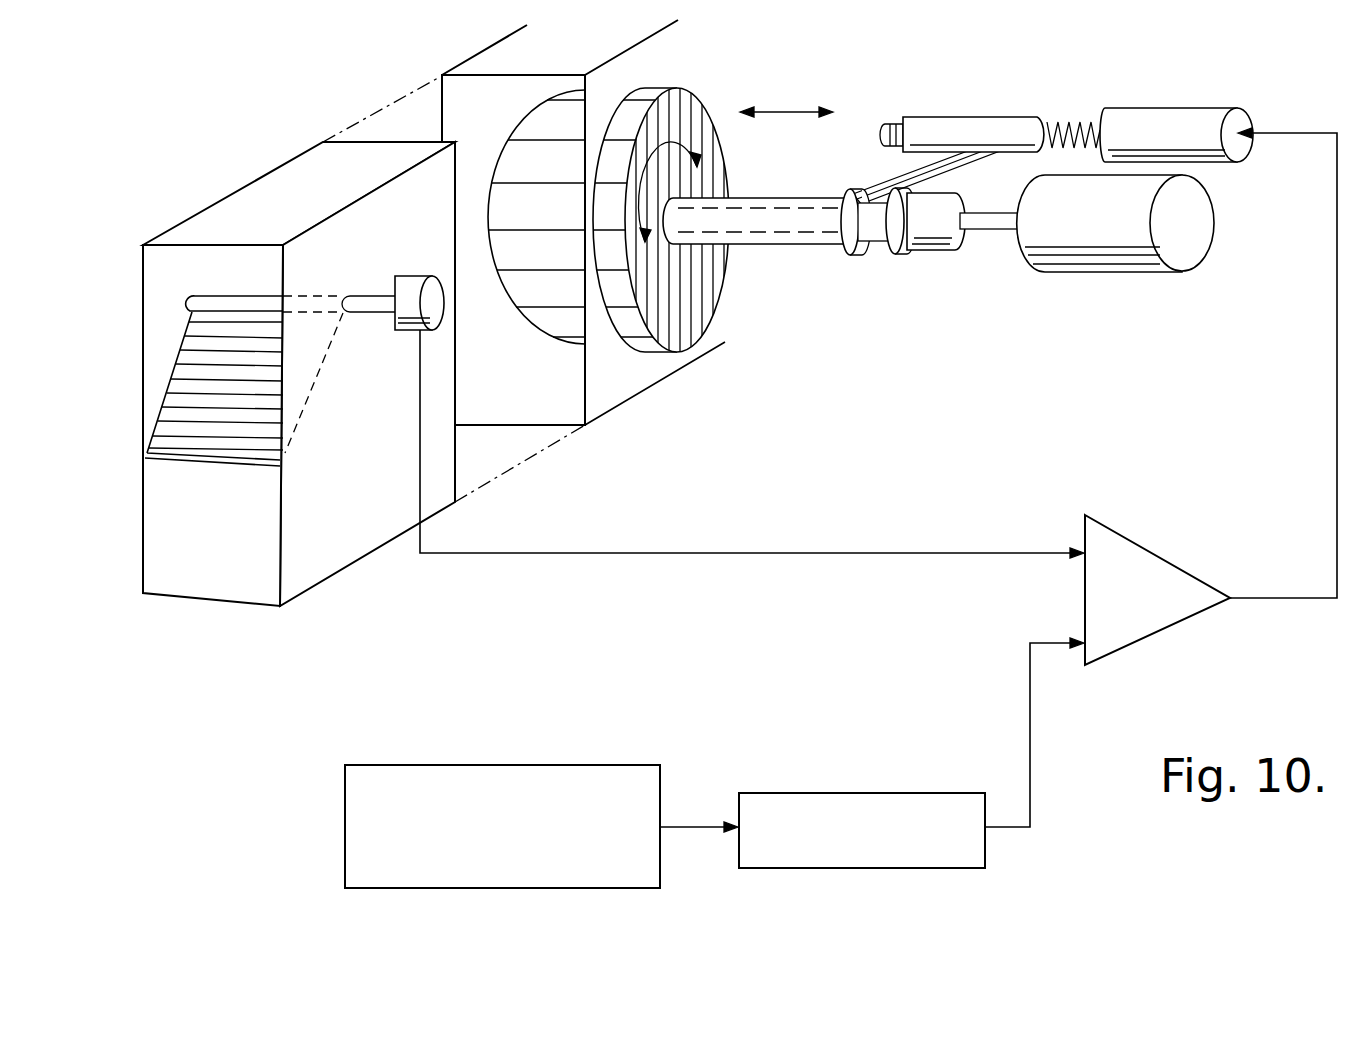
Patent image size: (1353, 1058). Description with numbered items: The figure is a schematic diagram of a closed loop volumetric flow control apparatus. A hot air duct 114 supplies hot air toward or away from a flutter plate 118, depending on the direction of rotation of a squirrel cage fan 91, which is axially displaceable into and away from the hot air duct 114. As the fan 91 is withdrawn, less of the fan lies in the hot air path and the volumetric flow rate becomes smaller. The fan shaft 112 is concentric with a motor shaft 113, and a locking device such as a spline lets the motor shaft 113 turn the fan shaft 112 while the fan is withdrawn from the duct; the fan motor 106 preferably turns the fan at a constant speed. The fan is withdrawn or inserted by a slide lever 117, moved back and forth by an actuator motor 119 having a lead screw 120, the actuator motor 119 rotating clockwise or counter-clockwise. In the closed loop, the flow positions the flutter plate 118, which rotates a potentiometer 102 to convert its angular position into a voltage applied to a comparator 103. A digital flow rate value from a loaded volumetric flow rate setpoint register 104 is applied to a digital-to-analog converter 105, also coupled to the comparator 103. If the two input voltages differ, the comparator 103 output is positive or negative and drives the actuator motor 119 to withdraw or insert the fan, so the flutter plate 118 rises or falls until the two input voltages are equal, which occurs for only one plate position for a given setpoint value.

The squirrel cage fan 91 is at (690, 342).
The potentiometer 102 is at (407, 331).
The comparator 103 is at (1167, 572).
The volumetric flow rate setpoint register 104 is at (348, 798).
The digital-to-analog converter 105 is at (972, 778).
The fan motor 106 is at (1203, 229).
The fan shaft 112 is at (780, 233).
The motor shaft 113 is at (1013, 214).
The hot air duct 114 is at (625, 385).
The slide lever 117 is at (947, 170).
The flutter plate 118 is at (205, 450).
The actuator motor 119 is at (1240, 157).
The lead screw 120 is at (1080, 125).